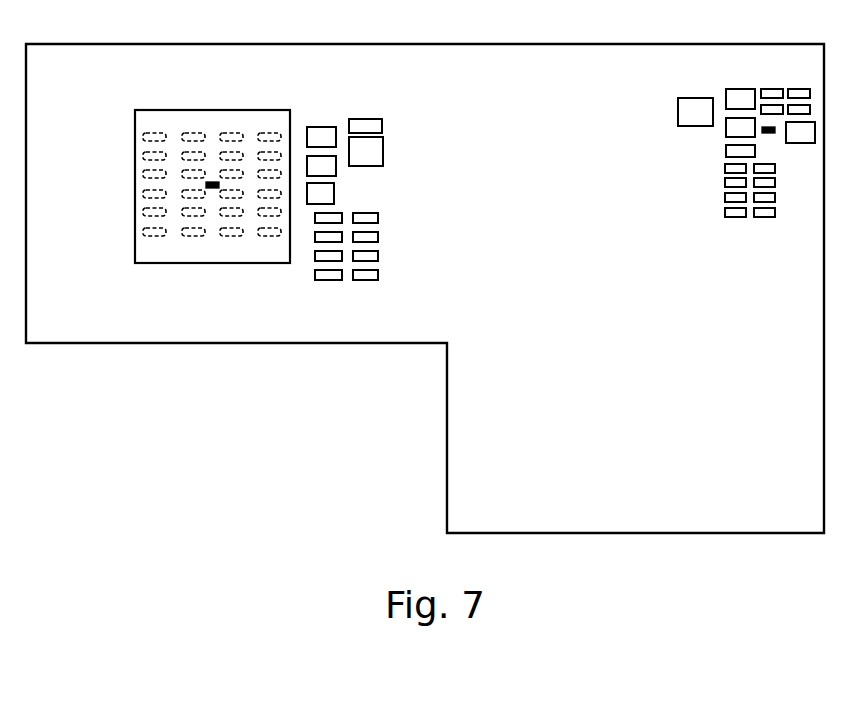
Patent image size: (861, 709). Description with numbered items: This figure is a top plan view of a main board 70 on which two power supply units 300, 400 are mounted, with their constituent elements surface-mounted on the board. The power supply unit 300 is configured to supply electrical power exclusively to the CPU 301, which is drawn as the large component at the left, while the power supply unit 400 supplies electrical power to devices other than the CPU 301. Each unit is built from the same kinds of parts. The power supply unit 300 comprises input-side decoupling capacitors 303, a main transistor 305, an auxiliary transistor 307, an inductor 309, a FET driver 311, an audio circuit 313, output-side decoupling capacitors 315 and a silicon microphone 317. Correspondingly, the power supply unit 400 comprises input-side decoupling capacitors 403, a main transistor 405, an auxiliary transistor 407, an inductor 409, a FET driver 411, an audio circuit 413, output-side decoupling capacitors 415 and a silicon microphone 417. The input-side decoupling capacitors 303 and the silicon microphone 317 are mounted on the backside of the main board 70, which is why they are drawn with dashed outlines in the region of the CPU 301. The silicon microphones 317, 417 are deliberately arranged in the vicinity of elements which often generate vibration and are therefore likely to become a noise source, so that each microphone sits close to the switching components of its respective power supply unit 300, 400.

The main board 70 is at (388, 43).
The power supply unit 300 is at (462, 77).
The CPU 301 is at (247, 110).
The input-side decoupling capacitors 303 is at (158, 133).
The main transistor 305 is at (322, 127).
The auxiliary transistor 307 is at (336, 168).
The inductor 309 is at (370, 119).
The FET driver 311 is at (383, 150).
The audio circuit 313 is at (334, 195).
The output-side decoupling capacitors 315 is at (378, 255).
The silicon microphone 317 is at (212, 188).
The power supply unit 400 is at (675, 77).
The input-side decoupling capacitors 403 is at (725, 195).
The main transistor 405 is at (726, 94).
The auxiliary transistor 407 is at (725, 129).
The inductor 409 is at (725, 151).
The FET driver 411 is at (678, 111).
The audio circuit 413 is at (813, 122).
The output-side decoupling capacitors 415 is at (790, 89).
The silicon microphone 417 is at (768, 134).